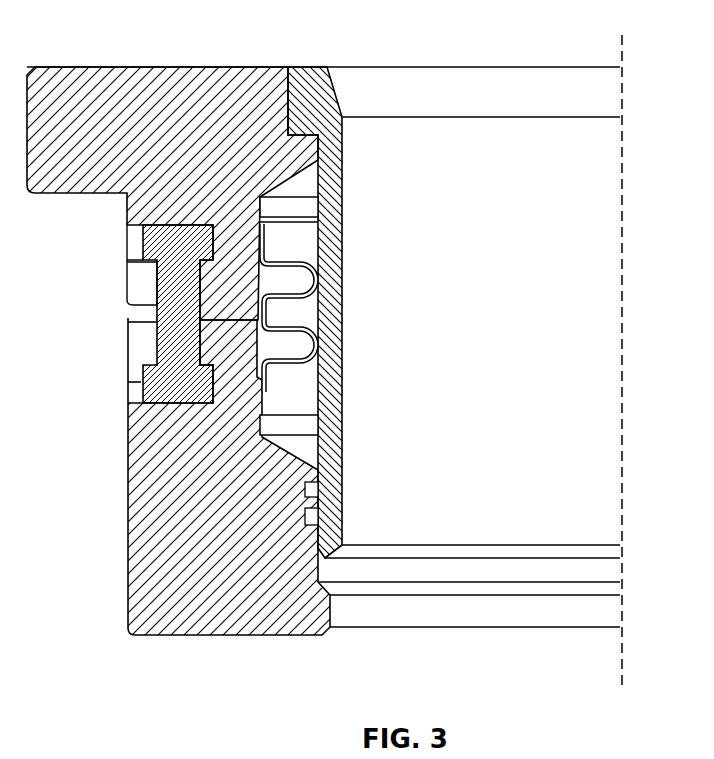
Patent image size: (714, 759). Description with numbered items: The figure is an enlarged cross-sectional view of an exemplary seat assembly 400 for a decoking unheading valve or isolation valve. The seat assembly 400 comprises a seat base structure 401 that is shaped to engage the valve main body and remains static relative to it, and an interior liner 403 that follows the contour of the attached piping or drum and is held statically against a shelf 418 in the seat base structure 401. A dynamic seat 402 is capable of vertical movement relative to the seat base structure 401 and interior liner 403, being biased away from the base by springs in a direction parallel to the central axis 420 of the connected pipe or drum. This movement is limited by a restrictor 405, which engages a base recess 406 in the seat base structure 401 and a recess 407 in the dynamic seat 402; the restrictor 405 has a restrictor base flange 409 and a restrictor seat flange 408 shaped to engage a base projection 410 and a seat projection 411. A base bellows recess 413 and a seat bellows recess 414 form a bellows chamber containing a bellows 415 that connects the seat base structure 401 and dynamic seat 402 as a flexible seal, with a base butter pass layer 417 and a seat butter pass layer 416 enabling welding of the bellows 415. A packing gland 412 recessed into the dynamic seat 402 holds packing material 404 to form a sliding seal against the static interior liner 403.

The seat assembly 400 is at (316, 44).
The seat base structure 401 is at (90, 113).
The dynamic seat 402 is at (190, 605).
The interior liner 403 is at (538, 338).
The packing material 404 is at (320, 521).
The restrictor 405 is at (128, 324).
The base recess 406 is at (127, 272).
The recess 407 is at (128, 383).
The restrictor seat flange 408 is at (192, 402).
The restrictor base flange 409 is at (165, 240).
The base projection 410 is at (228, 262).
The seat projection 411 is at (204, 352).
The packing gland 412 is at (305, 516).
The base bellows recess 413 is at (318, 207).
The seat bellows recess 414 is at (318, 462).
The bellows 415 is at (306, 298).
The seat butter pass layer 416 is at (262, 404).
The base butter pass layer 417 is at (268, 226).
The shelf 418 is at (313, 150).
The central axis 420 is at (624, 58).